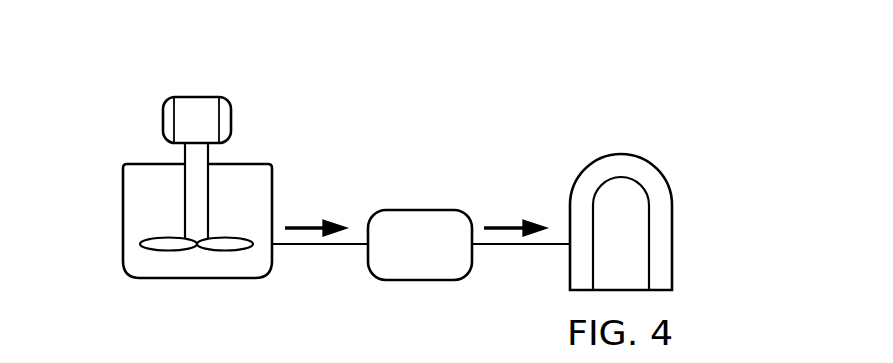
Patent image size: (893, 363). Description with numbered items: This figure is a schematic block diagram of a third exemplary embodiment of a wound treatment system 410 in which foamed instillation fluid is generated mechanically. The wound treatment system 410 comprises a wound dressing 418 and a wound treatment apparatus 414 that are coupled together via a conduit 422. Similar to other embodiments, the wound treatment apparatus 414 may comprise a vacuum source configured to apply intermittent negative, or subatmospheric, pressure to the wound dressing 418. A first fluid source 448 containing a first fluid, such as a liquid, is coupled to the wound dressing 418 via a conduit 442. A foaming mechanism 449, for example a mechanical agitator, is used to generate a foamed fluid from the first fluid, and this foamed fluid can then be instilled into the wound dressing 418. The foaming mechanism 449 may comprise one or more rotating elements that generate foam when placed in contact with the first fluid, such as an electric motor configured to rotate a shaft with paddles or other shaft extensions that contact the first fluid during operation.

The wound treatment system 410 is at (633, 98).
The wound treatment apparatus 414 is at (674, 233).
The wound dressing 418 is at (418, 281).
The conduit 422 is at (518, 247).
The conduit 442 is at (320, 246).
The first fluid source 448 is at (123, 197).
The foaming mechanism 449 is at (163, 121).